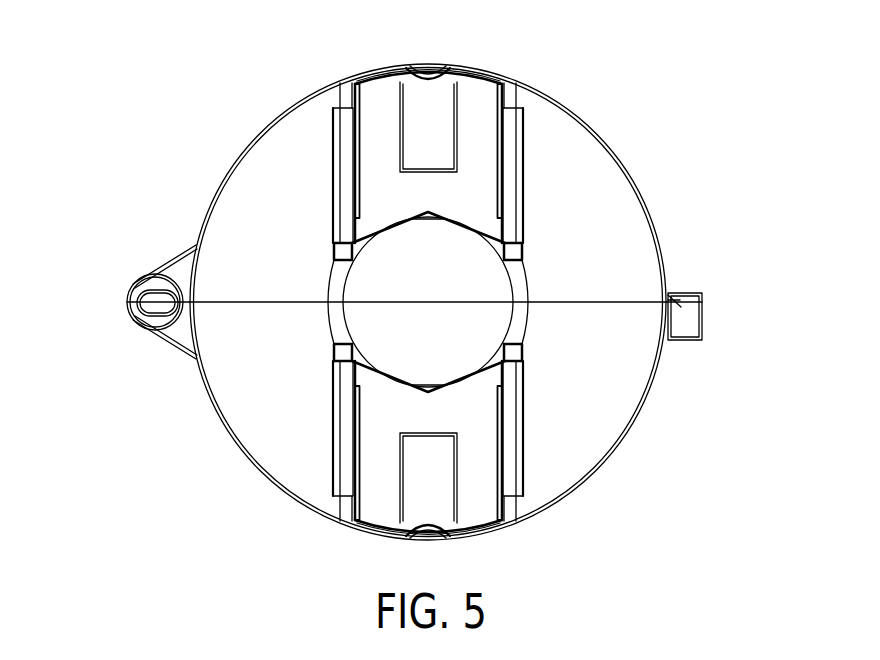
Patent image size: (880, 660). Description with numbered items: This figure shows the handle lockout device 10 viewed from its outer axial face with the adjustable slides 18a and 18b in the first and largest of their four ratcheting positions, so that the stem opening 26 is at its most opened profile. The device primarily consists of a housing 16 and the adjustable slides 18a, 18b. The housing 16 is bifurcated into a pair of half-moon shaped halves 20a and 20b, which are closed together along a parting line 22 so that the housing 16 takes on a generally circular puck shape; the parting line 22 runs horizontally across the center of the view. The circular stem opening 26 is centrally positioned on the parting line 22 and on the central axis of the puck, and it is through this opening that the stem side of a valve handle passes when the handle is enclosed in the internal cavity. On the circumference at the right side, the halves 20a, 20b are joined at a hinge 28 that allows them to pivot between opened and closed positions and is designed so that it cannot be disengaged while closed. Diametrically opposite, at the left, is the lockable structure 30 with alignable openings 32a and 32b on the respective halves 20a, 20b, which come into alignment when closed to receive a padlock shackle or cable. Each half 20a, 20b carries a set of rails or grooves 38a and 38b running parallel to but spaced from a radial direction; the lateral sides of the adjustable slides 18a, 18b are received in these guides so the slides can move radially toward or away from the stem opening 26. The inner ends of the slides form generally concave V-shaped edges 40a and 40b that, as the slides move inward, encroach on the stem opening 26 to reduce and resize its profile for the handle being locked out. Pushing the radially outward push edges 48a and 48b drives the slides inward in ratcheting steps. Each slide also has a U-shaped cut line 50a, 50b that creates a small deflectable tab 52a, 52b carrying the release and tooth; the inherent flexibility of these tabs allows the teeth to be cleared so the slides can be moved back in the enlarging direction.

The handle lockout device 10 is at (661, 54).
The housing 16 is at (632, 208).
The adjustable slide 18a is at (368, 128).
The adjustable slide 18b is at (372, 470).
The half 20a is at (590, 145).
The half 20b is at (600, 430).
The parting line 22 is at (258, 304).
The stem opening 26 is at (505, 272).
The hinge 28 is at (700, 320).
The lockable structure 30 is at (132, 337).
The alignable opening 32a is at (152, 297).
The alignable opening 32b is at (157, 303).
The rails or grooves 38a is at (345, 173).
The rails or grooves 38b is at (345, 422).
The edge 40a is at (388, 228).
The edge 40b is at (386, 376).
The push edge 48a is at (428, 75).
The push edge 48b is at (430, 532).
The U-shaped cut line 50a is at (458, 107).
The U-shaped cut line 50b is at (455, 490).
The deflectable tab 52a is at (445, 133).
The deflectable tab 52b is at (398, 515).